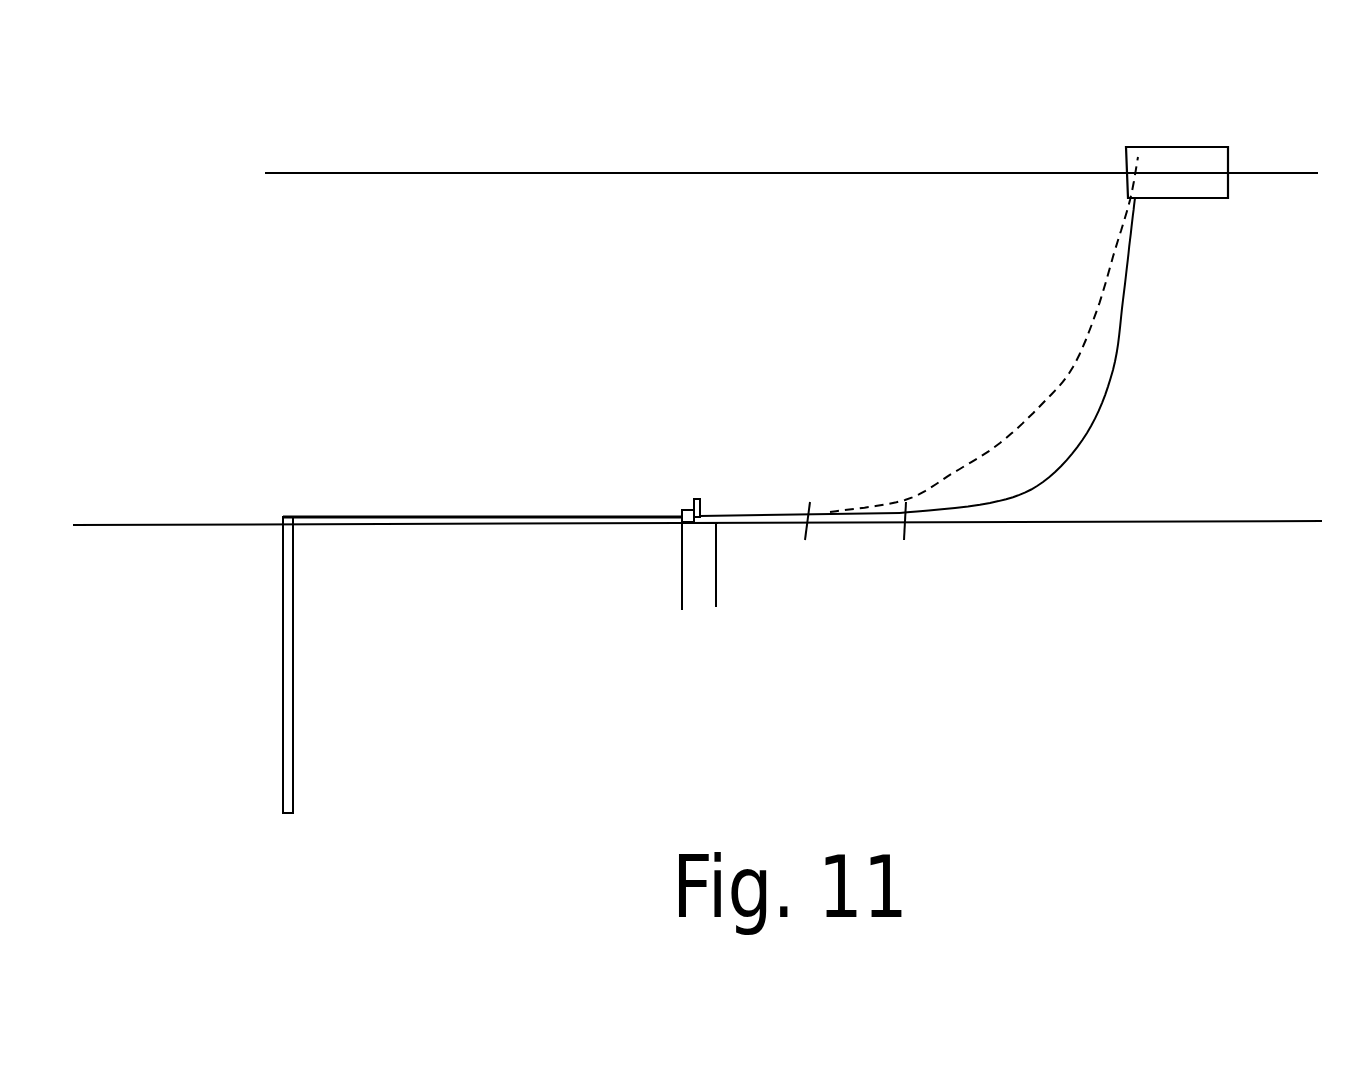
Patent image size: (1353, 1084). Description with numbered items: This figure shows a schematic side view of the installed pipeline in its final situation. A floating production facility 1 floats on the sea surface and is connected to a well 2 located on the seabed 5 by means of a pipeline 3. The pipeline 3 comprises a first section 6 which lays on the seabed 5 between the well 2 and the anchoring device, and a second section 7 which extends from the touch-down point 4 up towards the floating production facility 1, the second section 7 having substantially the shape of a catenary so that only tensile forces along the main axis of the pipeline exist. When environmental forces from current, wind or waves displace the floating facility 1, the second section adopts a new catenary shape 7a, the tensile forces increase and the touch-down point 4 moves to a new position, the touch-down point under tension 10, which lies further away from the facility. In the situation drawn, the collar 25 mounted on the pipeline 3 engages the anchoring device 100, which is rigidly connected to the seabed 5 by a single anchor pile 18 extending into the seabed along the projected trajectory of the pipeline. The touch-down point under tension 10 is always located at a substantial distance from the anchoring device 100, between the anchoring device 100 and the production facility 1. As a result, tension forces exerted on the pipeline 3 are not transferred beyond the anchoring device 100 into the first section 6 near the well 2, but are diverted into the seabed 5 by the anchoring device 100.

The production facility 1 is at (1208, 146).
The well 2 is at (282, 622).
The pipeline 3 is at (996, 505).
The touch-down point 4 is at (910, 524).
The seabed 5 is at (192, 522).
The first section 6 is at (400, 514).
The second section 7 is at (1116, 369).
The new catenary shape 7a is at (1066, 376).
The touch-down point under tension 10 is at (806, 529).
The anchor pile 18 is at (680, 588).
The collar 25 is at (687, 507).
The anchoring device 100 is at (693, 480).